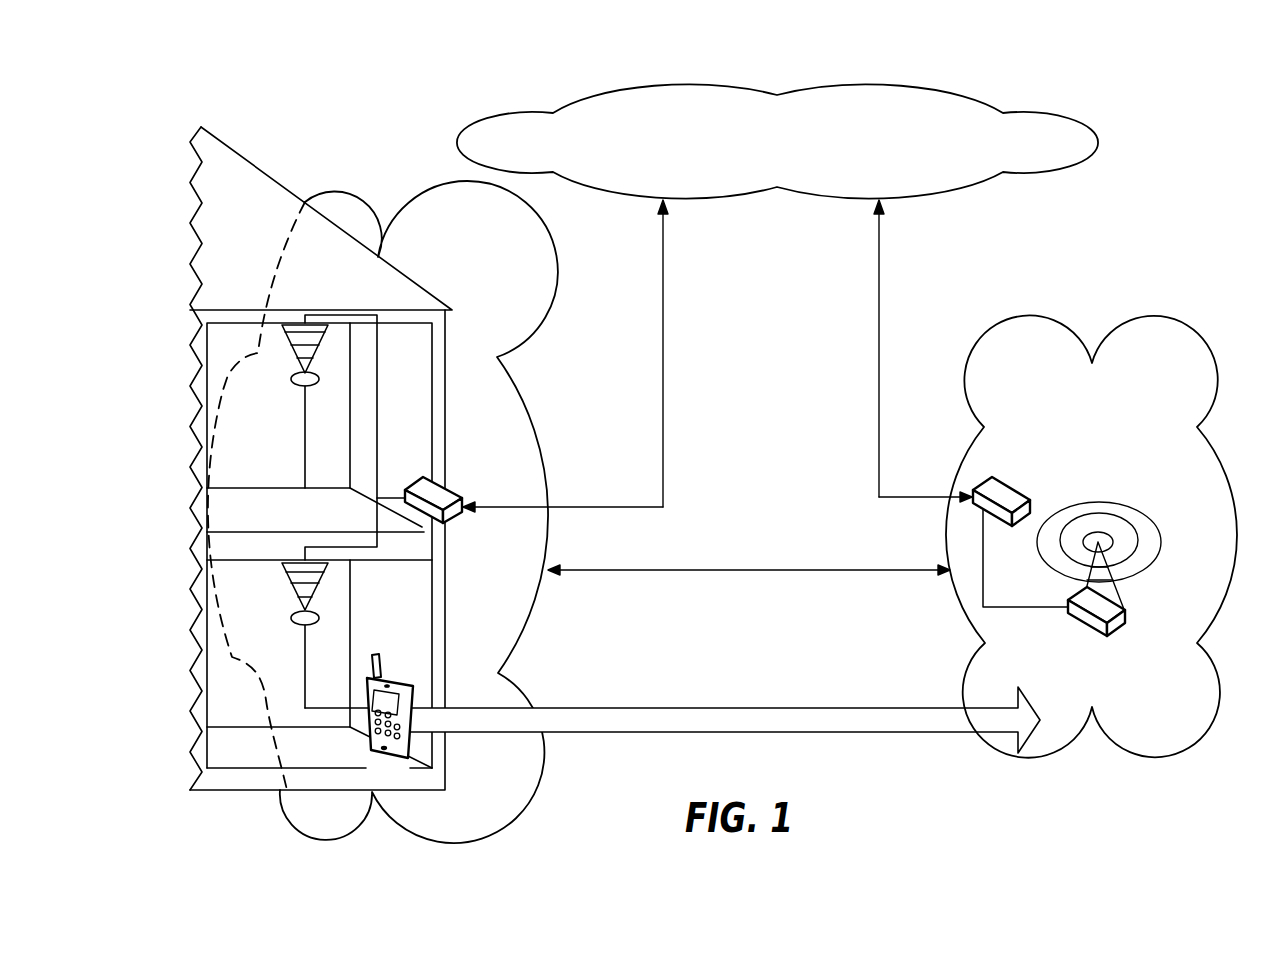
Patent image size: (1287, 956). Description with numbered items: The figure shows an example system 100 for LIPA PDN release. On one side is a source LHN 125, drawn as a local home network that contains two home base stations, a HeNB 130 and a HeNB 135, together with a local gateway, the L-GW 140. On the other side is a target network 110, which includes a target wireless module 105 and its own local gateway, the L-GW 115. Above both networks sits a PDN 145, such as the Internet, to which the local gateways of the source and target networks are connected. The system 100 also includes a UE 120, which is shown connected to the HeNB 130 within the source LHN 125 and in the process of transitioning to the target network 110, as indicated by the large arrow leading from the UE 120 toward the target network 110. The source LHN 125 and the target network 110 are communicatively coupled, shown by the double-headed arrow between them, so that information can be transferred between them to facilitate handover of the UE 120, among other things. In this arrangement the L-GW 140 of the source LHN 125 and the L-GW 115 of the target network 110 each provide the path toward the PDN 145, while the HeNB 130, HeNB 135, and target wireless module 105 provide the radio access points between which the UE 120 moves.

The system 100 is at (1186, 95).
The target wireless module 105 is at (1122, 627).
The target network 110 is at (1137, 318).
The L-GW 115 is at (1012, 490).
The UE 120 is at (393, 674).
The source LHN 125 is at (488, 303).
The HeNB 130 is at (295, 563).
The HeNB 135 is at (305, 368).
The L-GW 140 is at (443, 487).
The PDN 145 is at (459, 130).